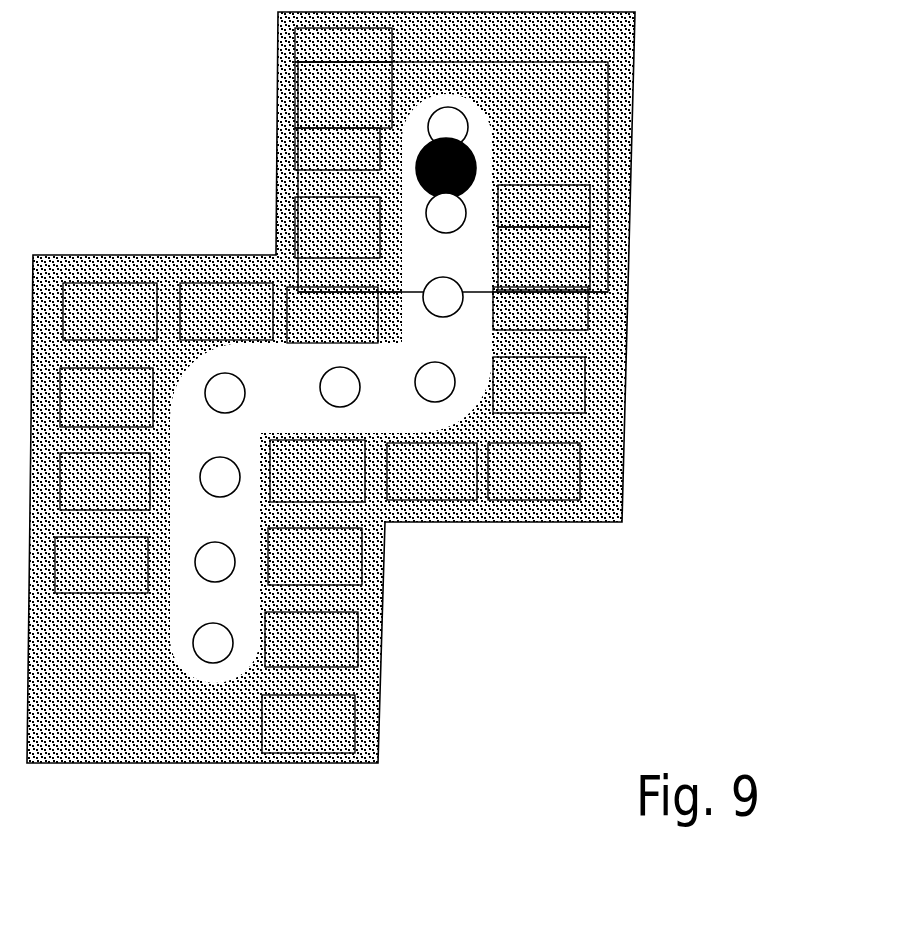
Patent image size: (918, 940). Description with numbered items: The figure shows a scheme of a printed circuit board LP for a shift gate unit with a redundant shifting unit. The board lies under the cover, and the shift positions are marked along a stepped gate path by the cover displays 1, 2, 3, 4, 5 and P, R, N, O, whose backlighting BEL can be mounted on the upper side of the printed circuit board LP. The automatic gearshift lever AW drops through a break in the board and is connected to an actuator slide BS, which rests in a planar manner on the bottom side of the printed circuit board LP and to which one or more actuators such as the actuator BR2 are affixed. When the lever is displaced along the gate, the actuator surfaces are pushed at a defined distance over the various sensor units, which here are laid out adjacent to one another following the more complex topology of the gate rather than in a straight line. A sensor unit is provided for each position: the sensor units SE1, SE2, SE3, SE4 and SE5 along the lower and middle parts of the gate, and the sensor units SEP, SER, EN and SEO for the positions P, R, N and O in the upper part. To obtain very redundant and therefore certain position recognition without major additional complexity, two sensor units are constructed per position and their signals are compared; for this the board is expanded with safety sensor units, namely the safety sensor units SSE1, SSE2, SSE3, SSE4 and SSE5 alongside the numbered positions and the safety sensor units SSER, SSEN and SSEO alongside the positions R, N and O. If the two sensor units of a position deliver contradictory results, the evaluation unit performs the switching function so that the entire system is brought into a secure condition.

The cover display 1 is at (213, 643).
The cover display 2 is at (215, 562).
The cover display 3 is at (220, 477).
The cover display 4 is at (225, 393).
The cover display 5 is at (340, 387).
The cover display P is at (448, 127).
The automatic gearshift lever AW is at (446, 168).
The cover display R is at (446, 213).
The cover display N is at (443, 297).
The cover display O is at (435, 382).
The actuator slide BS is at (455, 267).
The printed circuit board LP is at (206, 509).
The sensor unit SEP is at (442, 127).
The backlighting BEL is at (343, 95).
The safety sensor unit SSER is at (337, 149).
The safety sensor unit SSEN is at (337, 227).
The safety sensor unit SSEO is at (332, 315).
The actuator BR2 is at (544, 258).
The sensor unit SER is at (540, 308).
The sensor unit EN is at (539, 385).
The sensor unit SEO is at (534, 471).
The safety sensor unit SSE5 is at (432, 471).
The safety sensor unit SSE4 is at (317, 471).
The safety sensor unit SSE3 is at (315, 556).
The safety sensor unit SSE2 is at (311, 639).
The safety sensor unit SSE1 is at (308, 724).
The sensor unit SE1 is at (101, 565).
The sensor unit SE2 is at (105, 481).
The sensor unit SE3 is at (106, 397).
The sensor unit SE4 is at (110, 311).
The sensor unit SE5 is at (226, 311).